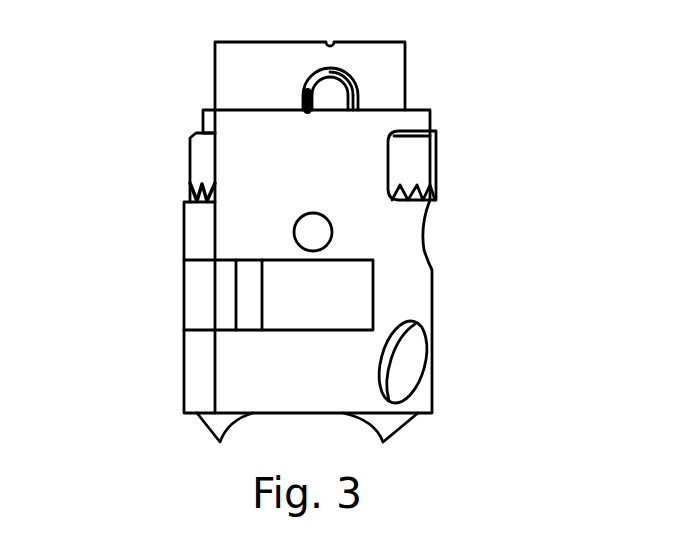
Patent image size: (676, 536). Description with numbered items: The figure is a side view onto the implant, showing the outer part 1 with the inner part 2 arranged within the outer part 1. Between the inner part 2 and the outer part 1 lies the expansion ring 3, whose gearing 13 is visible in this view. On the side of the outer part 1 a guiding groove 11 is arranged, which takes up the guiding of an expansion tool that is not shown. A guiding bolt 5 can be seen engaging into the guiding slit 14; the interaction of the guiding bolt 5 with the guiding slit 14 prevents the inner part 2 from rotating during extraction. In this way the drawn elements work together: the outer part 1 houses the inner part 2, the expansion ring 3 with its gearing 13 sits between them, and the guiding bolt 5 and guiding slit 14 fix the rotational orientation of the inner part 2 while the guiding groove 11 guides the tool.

The outer part 1 is at (420, 118).
The inner part 2 is at (393, 95).
The expansion ring 3 is at (420, 170).
The guiding bolts 5 is at (315, 233).
The guiding groove 11 is at (305, 296).
The gearing of expansion ring 13 is at (432, 202).
The guiding slit 14 is at (327, 95).